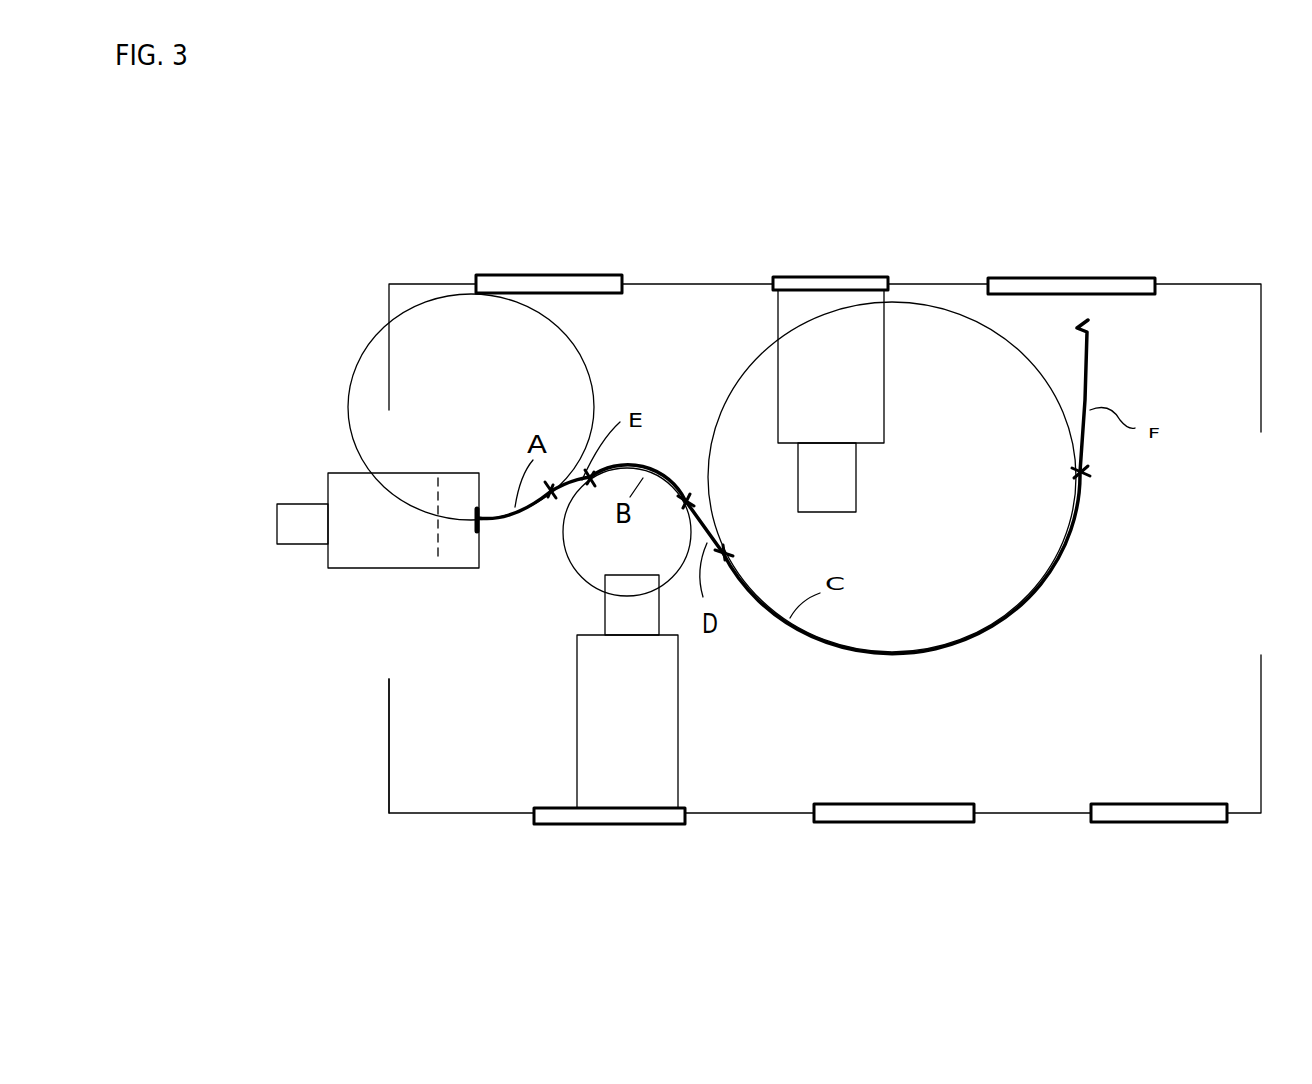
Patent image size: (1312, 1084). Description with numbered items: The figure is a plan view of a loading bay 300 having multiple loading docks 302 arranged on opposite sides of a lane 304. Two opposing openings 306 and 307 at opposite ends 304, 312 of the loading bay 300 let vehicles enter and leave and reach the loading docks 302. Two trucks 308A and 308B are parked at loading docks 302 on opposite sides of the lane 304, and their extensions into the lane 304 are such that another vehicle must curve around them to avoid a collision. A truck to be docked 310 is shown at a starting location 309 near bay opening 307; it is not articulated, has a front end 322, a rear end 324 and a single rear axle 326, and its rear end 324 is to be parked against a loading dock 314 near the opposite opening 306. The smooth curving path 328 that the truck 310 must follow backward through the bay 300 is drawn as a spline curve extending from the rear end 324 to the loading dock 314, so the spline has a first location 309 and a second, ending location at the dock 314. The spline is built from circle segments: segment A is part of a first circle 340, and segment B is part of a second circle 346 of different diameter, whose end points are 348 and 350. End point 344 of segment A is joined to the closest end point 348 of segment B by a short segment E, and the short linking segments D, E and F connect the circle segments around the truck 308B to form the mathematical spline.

The loading bay 300 is at (280, 960).
The loading docks 302 is at (542, 270).
The lane 304 is at (1205, 716).
The bay opening 306 is at (838, 548).
The bay opening 307 is at (272, 420).
The truck 308A is at (872, 428).
The truck 308B is at (627, 721).
The starting location 309 is at (466, 496).
The truck to be docked 310 is at (403, 520).
The end of loading bay 312 is at (403, 764).
The loading dock 314 is at (1080, 253).
The front end 322 is at (250, 552).
The rear end 324 is at (497, 473).
The rear axle 326 is at (425, 553).
The curving path 328 is at (628, 470).
The first circle 340 is at (358, 356).
The end point 344 is at (543, 510).
The second circle 346 is at (577, 583).
The end point 348 is at (600, 488).
The end point 350 is at (687, 507).